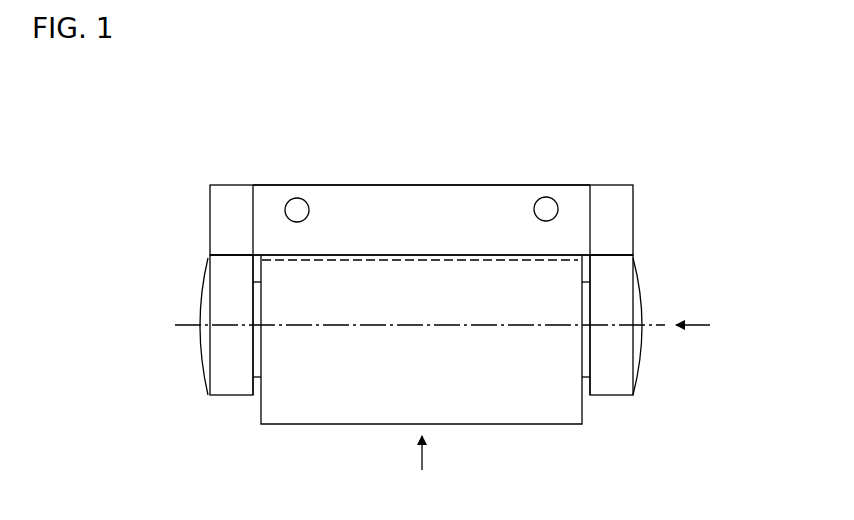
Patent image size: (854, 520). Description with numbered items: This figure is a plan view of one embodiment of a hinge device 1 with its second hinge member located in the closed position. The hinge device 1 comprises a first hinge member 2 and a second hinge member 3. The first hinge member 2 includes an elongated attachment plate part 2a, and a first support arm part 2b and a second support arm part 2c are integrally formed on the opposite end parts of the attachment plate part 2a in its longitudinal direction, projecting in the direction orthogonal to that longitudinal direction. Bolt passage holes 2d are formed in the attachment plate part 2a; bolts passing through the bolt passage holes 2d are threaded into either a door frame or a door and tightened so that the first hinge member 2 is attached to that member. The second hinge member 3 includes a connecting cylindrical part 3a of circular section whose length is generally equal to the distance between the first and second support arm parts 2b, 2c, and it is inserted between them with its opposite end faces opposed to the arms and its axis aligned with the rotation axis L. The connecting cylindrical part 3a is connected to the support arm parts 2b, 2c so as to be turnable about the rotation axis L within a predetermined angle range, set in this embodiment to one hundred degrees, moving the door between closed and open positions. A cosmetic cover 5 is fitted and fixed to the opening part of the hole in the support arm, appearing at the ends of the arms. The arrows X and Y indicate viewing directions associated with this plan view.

The hinge device 1 is at (497, 162).
The first hinge member 2 is at (385, 182).
The attachment plate part 2a is at (449, 185).
The first support arm part 2b is at (613, 395).
The second support arm part 2c is at (235, 397).
The bolt passage holes 2d is at (297, 201).
The second hinge member 3 is at (342, 430).
The connecting cylindrical part 3a is at (343, 255).
The cosmetic cover 5 is at (200, 342).
The rotation axis L is at (660, 323).
The Y direction Y is at (702, 326).
The X direction X is at (422, 467).